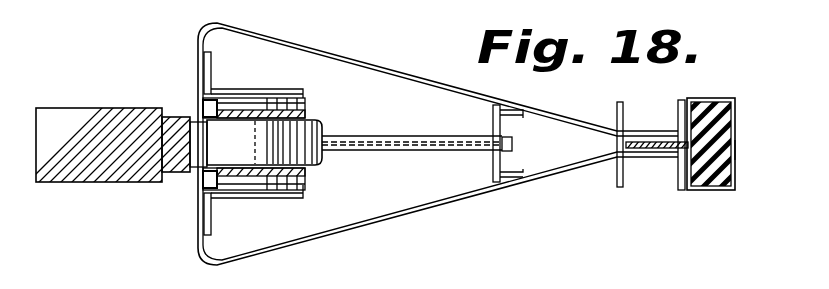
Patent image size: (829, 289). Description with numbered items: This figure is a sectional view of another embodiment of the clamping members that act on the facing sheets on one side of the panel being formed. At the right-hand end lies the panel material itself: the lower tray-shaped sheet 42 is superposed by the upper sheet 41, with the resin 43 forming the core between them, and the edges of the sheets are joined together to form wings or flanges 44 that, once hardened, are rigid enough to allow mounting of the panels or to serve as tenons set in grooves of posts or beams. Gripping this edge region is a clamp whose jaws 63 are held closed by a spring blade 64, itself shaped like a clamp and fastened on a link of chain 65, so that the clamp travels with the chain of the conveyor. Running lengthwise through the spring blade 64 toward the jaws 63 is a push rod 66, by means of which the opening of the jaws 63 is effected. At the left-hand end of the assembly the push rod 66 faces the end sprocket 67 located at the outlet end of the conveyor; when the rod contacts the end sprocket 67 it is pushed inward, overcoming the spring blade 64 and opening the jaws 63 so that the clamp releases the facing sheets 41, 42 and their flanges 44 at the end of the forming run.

The upper sheet 41 is at (690, 99).
The lower tray-shaped sheet 42 is at (727, 192).
The resin 43 is at (735, 150).
The wings or flanges 44 is at (661, 97).
The jaws 63 is at (637, 132).
The spring blade 64 is at (448, 202).
The link of chain 65 is at (200, 217).
The push rod 66 is at (370, 142).
The end sprocket 67 is at (98, 122).